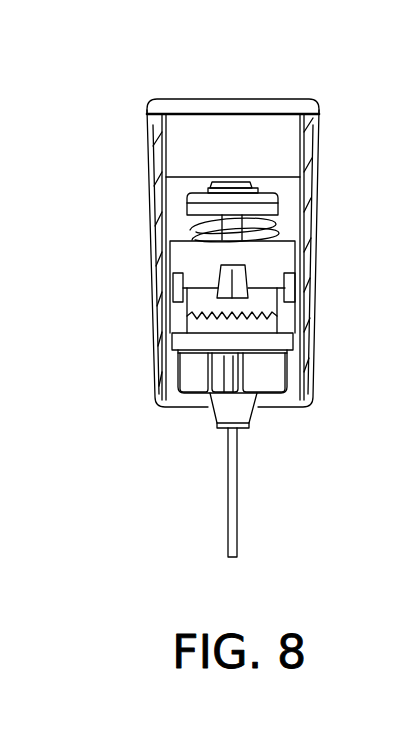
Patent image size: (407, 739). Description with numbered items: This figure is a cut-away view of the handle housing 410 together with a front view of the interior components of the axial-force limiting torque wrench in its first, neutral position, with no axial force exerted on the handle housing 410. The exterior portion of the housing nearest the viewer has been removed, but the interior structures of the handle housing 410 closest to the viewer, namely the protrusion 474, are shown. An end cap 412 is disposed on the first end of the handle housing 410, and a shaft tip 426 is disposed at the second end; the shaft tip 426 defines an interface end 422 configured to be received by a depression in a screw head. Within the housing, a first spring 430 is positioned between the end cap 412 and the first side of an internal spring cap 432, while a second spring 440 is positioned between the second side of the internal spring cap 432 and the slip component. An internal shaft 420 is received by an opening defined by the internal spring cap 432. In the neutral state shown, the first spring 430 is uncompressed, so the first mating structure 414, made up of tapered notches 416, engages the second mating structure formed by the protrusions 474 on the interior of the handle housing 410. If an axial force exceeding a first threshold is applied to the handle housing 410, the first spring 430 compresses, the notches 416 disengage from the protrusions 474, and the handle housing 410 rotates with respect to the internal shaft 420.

The handle housing 410 is at (303, 398).
The end cap 412 is at (304, 108).
The first mating structure 414 is at (198, 273).
The tapered notch 416 is at (240, 222).
The internal shaft 420 is at (240, 268).
The interface end 422 is at (238, 556).
The shaft tip 426 is at (231, 490).
The first spring 430 is at (238, 182).
The internal spring cap 432 is at (276, 209).
The second spring 440 is at (196, 232).
The protrusion 474 is at (173, 279).